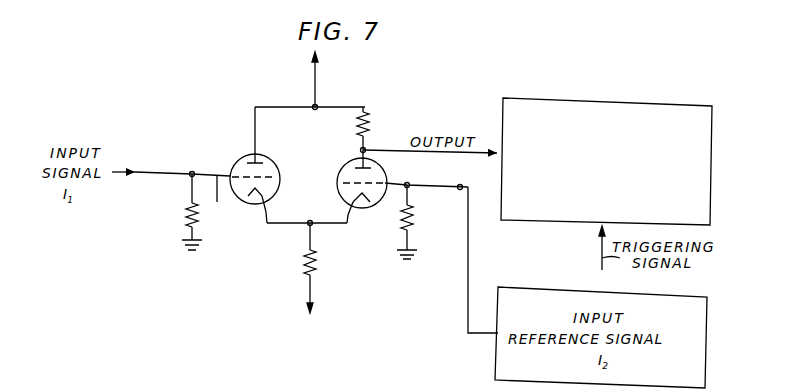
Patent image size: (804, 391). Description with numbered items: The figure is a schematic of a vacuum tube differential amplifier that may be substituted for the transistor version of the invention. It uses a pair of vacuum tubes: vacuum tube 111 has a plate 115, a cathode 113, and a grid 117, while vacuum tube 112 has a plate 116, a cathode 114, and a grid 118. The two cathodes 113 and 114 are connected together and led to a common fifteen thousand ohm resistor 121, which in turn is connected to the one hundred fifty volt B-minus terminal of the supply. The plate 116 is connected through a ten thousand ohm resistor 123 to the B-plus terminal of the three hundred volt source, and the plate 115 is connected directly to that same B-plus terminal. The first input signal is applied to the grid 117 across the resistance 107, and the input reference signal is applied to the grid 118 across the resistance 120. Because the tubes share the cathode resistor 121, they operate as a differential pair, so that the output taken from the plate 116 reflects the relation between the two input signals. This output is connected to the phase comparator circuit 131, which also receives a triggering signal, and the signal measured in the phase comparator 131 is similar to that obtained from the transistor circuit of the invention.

The resistance 107 is at (184, 216).
The vacuum tube 111 is at (238, 160).
The vacuum tube 112 is at (355, 160).
The cathode 113 is at (260, 208).
The cathode 114 is at (350, 207).
The plate 115 is at (255, 160).
The plate 116 is at (352, 160).
The grid 117 is at (221, 204).
The grid 118 is at (383, 164).
The resistance 120 is at (392, 232).
The resistor 121 is at (300, 263).
The resistor 123 is at (372, 128).
The phase comparator circuit 131 is at (604, 104).